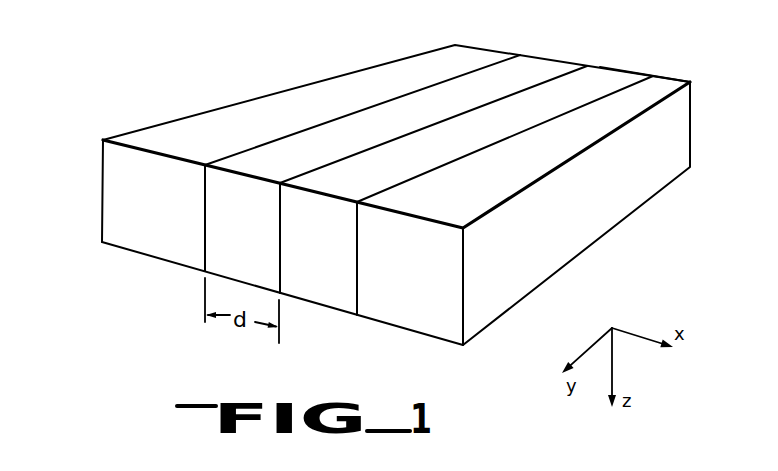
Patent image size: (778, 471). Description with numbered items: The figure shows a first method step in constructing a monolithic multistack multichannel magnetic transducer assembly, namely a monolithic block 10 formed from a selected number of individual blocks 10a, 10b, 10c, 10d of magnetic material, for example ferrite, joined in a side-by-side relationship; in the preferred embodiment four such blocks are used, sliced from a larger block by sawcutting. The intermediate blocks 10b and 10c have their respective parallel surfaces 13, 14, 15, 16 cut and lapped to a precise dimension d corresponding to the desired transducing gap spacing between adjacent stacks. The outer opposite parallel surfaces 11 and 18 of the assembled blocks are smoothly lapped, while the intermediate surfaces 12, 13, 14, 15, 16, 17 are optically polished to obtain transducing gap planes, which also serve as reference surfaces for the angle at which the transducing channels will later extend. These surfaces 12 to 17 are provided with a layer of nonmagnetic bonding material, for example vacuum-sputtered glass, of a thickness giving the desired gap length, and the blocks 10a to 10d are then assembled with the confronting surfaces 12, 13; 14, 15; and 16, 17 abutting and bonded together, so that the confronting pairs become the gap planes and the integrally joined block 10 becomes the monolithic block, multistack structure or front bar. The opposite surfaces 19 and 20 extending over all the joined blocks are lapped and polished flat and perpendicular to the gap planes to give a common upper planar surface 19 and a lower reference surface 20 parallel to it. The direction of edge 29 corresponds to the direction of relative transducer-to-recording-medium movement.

The monolithic block 10 is at (212, 88).
The individual block 10a is at (467, 55).
The individual block 10b is at (528, 65).
The individual block 10c is at (590, 72).
The individual block 10d is at (647, 83).
The opposite parallel surface 11 is at (102, 185).
The gap plane surface 12 is at (162, 218).
The gap plane surface 13 is at (202, 232).
The gap plane surface 14 is at (248, 238).
The gap plane surface 15 is at (279, 255).
The gap plane surface 16 is at (401, 258).
The gap plane surface 17 is at (357, 282).
The opposite parallel surface 18 is at (623, 206).
The upper planar surface 19 is at (328, 87).
The lower reference surface 20 is at (104, 243).
The edge 29 is at (417, 213).